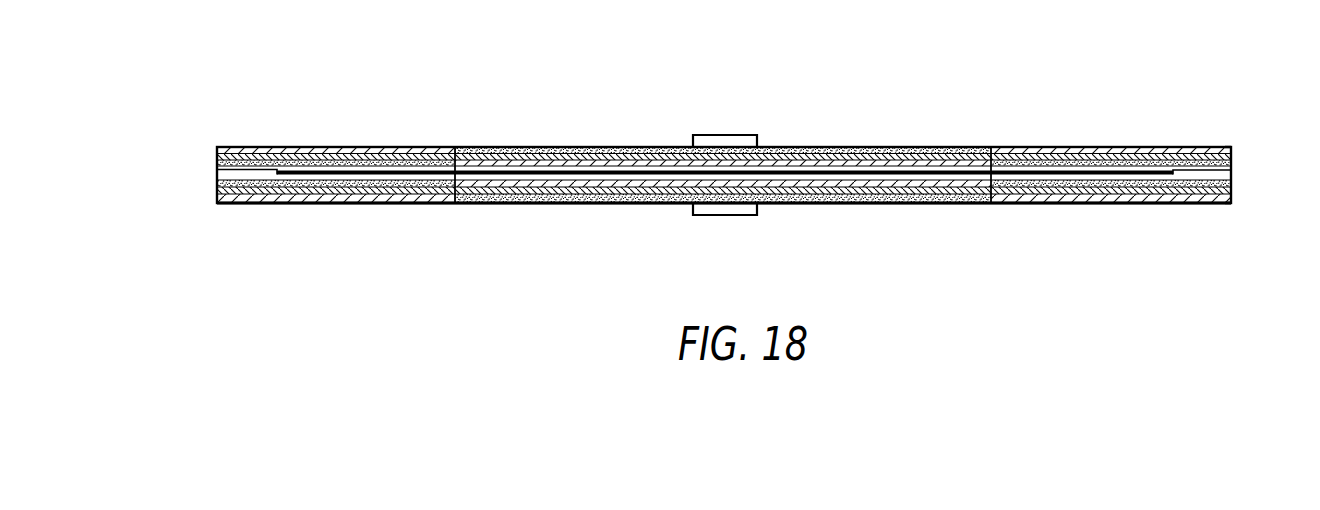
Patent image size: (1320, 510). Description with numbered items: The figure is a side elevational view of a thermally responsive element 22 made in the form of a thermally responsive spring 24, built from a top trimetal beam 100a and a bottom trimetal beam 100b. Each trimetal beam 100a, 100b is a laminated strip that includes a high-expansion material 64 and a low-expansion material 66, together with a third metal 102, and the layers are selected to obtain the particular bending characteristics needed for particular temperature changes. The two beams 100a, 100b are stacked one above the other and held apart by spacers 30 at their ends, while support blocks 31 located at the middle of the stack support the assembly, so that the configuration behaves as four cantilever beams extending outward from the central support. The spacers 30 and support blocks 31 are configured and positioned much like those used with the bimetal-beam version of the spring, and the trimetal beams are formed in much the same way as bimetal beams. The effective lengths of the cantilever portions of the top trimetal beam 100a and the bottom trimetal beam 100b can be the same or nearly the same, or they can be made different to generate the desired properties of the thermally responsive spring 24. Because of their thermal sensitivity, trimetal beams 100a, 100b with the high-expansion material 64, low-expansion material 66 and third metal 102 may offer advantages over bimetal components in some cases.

The laminated panel assembly 22 is at (866, 118).
The thermally responsive spring 24 is at (929, 147).
The spacer 30 is at (218, 176).
The support block 31 is at (733, 142).
The high-expansion material 64 is at (534, 150).
The low-expansion material 66 is at (377, 152).
The top trimetal beam 100a is at (1232, 148).
The bottom trimetal beam 100b is at (1232, 197).
The third metal 102 is at (396, 160).